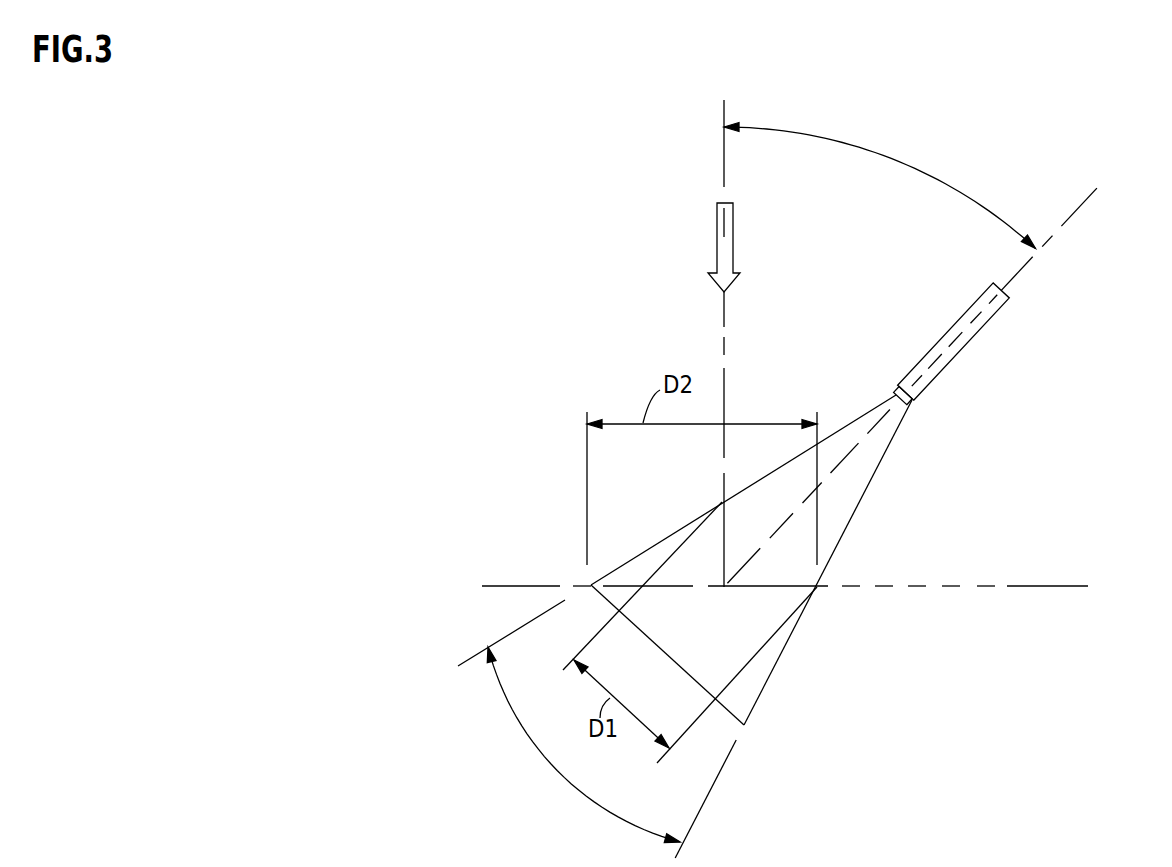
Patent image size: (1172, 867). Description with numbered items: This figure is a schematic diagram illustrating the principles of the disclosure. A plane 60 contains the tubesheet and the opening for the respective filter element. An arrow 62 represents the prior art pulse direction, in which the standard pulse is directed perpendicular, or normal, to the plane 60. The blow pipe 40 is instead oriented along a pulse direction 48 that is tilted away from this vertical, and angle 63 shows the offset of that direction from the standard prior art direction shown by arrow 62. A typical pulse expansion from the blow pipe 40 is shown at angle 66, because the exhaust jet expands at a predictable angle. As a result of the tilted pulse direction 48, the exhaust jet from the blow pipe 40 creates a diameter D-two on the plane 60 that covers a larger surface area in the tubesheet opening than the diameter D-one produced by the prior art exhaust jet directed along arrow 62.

The blow pipe 40 is at (973, 342).
The pulse direction 48 is at (1080, 210).
The plane 60 is at (1037, 585).
The arrow 62 is at (733, 230).
The angle 63 is at (913, 158).
The angle 66 is at (540, 753).